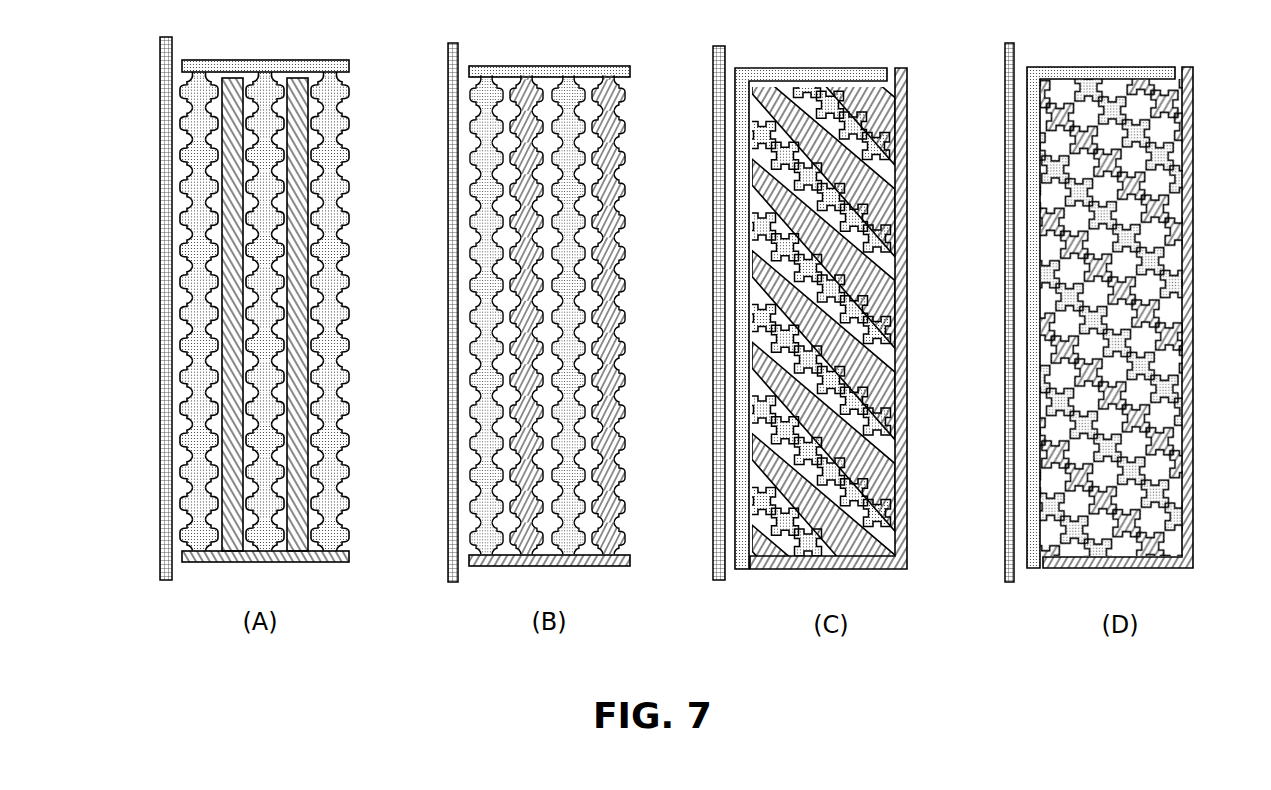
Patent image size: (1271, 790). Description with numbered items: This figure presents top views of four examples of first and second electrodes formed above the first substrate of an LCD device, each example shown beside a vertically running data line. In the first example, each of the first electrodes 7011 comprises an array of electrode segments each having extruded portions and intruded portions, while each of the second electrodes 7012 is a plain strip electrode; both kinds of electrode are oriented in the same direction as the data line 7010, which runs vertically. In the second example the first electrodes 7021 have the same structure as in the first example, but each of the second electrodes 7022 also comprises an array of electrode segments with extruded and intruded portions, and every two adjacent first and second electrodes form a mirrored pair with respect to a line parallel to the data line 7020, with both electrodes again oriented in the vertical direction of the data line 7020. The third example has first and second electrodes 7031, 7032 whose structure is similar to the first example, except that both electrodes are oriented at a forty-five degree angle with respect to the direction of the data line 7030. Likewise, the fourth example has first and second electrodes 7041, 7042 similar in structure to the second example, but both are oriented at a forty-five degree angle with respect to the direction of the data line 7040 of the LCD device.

The data line 7010 is at (161, 197).
The first electrode 7011 is at (210, 79).
The second electrode 7012 is at (308, 80).
The data line 7020 is at (449, 197).
The first electrode 7021 is at (498, 79).
The second electrode 7022 is at (622, 80).
The data line 7030 is at (714, 203).
The first electrode 7031 is at (806, 80).
The second electrode 7032 is at (886, 82).
The data line 7040 is at (1006, 197).
The first electrode 7041 is at (1063, 75).
The second electrode 7042 is at (1140, 88).